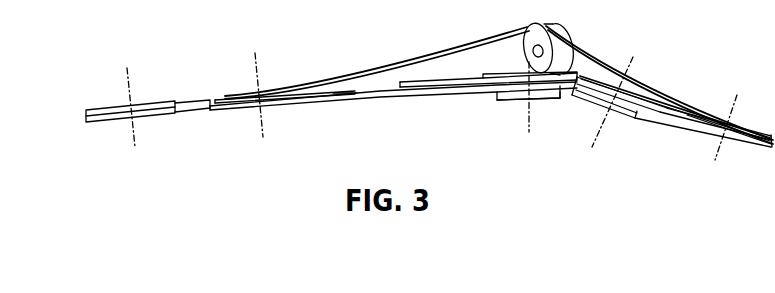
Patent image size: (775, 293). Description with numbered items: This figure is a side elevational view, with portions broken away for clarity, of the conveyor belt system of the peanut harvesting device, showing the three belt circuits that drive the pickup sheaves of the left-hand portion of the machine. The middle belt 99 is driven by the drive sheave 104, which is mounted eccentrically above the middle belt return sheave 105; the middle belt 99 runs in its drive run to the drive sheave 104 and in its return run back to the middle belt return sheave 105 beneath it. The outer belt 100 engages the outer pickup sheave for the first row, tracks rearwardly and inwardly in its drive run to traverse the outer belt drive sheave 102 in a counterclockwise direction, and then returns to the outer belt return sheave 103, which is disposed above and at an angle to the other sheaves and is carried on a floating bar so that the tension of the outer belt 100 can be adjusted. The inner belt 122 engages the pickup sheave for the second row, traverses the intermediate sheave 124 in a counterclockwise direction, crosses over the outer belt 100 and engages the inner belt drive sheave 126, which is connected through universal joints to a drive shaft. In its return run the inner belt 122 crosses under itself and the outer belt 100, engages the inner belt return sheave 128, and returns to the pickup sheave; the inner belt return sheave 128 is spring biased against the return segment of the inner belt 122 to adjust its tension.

The middle belt 99 is at (673, 107).
The outer belt 100 is at (447, 50).
The outer belt drive sheave 102 is at (265, 92).
The outer belt return sheave 103 is at (543, 31).
The drive sheave 104 is at (592, 78).
The middle belt return sheave 105 is at (588, 107).
The inner belt 122 is at (85, 118).
The intermediate sheave 124 is at (513, 58).
The inner belt drive sheave 126 is at (107, 106).
The inner belt return sheave 128 is at (487, 100).